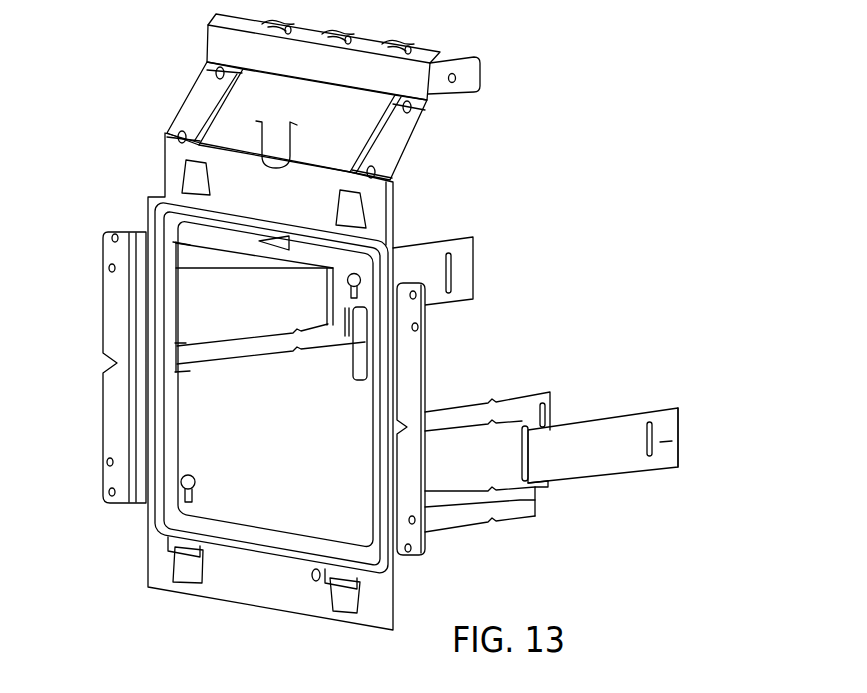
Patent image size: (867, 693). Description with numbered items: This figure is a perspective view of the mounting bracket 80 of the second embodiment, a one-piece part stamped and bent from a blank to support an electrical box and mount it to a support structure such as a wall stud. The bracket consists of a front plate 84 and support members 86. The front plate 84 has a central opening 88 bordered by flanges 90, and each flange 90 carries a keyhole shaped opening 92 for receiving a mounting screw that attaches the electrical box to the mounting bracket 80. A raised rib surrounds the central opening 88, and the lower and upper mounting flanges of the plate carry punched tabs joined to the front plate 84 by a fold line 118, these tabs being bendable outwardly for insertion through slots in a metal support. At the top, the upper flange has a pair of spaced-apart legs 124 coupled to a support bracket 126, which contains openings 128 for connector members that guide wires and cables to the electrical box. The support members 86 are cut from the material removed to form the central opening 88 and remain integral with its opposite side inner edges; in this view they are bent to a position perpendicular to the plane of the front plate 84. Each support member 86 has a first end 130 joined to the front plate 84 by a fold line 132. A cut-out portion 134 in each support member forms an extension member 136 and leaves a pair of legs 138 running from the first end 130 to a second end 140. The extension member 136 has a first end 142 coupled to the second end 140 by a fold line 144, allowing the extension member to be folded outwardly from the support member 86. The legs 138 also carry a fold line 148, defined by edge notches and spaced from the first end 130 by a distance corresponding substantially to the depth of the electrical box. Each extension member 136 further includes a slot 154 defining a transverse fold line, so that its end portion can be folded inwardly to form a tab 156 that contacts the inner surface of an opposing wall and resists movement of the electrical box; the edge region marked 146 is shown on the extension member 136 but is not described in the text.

The mounting bracket 80 is at (470, 191).
The front plate 84 is at (250, 524).
The support members 86 is at (528, 524).
The central opening 88 is at (344, 382).
The flanges 90 is at (103, 320).
The keyhole shaped opening 92 is at (349, 284).
The fold line 118 is at (345, 612).
The legs 124 is at (206, 115).
The support bracket 126 is at (474, 62).
The openings 128 is at (420, 45).
The first end 130 is at (190, 373).
The fold line 132 is at (178, 348).
The cut-out portion 134 is at (474, 488).
The extension member 136 is at (637, 413).
The legs 138 is at (480, 413).
The second end 140 is at (553, 393).
The first end 142 is at (548, 470).
The fold line 144 is at (520, 480).
The panel edge 146 is at (680, 408).
The fold line 148 is at (287, 347).
The slot 154 is at (649, 458).
The tab 156 is at (666, 453).